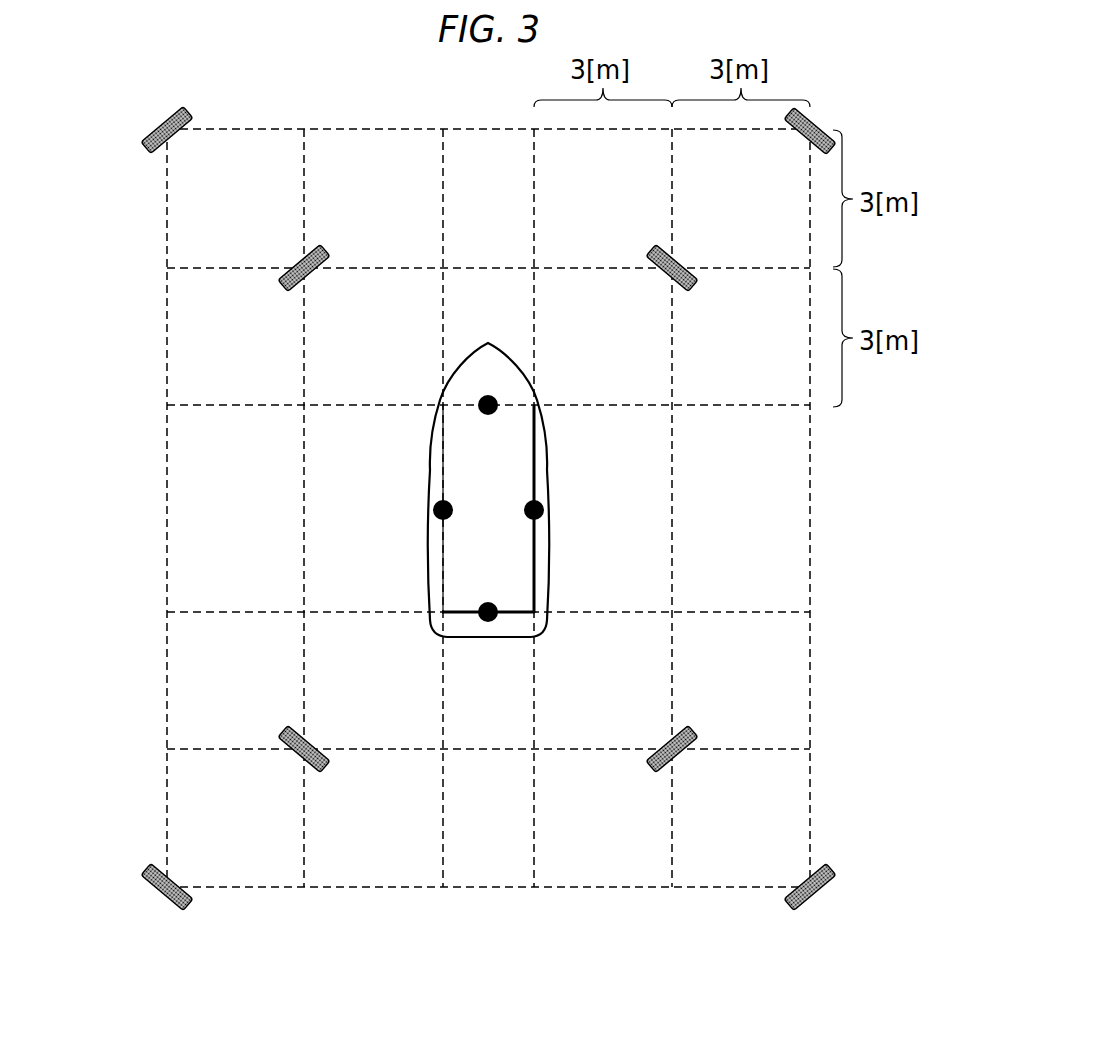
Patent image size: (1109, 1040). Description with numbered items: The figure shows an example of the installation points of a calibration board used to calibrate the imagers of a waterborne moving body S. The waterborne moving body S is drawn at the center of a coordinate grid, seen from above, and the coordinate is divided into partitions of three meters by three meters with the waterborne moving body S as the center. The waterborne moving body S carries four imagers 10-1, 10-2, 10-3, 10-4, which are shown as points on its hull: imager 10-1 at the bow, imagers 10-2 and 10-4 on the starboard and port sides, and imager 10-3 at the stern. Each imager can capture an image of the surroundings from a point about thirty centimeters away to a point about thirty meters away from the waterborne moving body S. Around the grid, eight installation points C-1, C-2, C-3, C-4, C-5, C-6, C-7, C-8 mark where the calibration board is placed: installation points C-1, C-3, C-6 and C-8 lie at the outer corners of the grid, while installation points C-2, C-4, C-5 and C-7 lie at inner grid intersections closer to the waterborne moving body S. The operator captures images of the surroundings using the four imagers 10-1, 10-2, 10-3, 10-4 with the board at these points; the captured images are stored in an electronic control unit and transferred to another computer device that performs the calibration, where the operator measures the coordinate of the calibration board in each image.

The installation point of the calibration board C-1 is at (157, 131).
The installation point of the calibration board C-2 is at (300, 263).
The installation point of the calibration board C-3 is at (815, 125).
The installation point of the calibration board C-4 is at (673, 259).
The installation point of the calibration board C-5 is at (302, 756).
The installation point of the calibration board C-6 is at (160, 891).
The installation point of the calibration board C-7 is at (677, 754).
The installation point of the calibration board C-8 is at (817, 892).
The imager 10-1 is at (488, 395).
The imager 10-2 is at (543, 506).
The imager 10-3 is at (488, 622).
The imager 10-4 is at (436, 516).
The waterborne moving body S is at (430, 466).